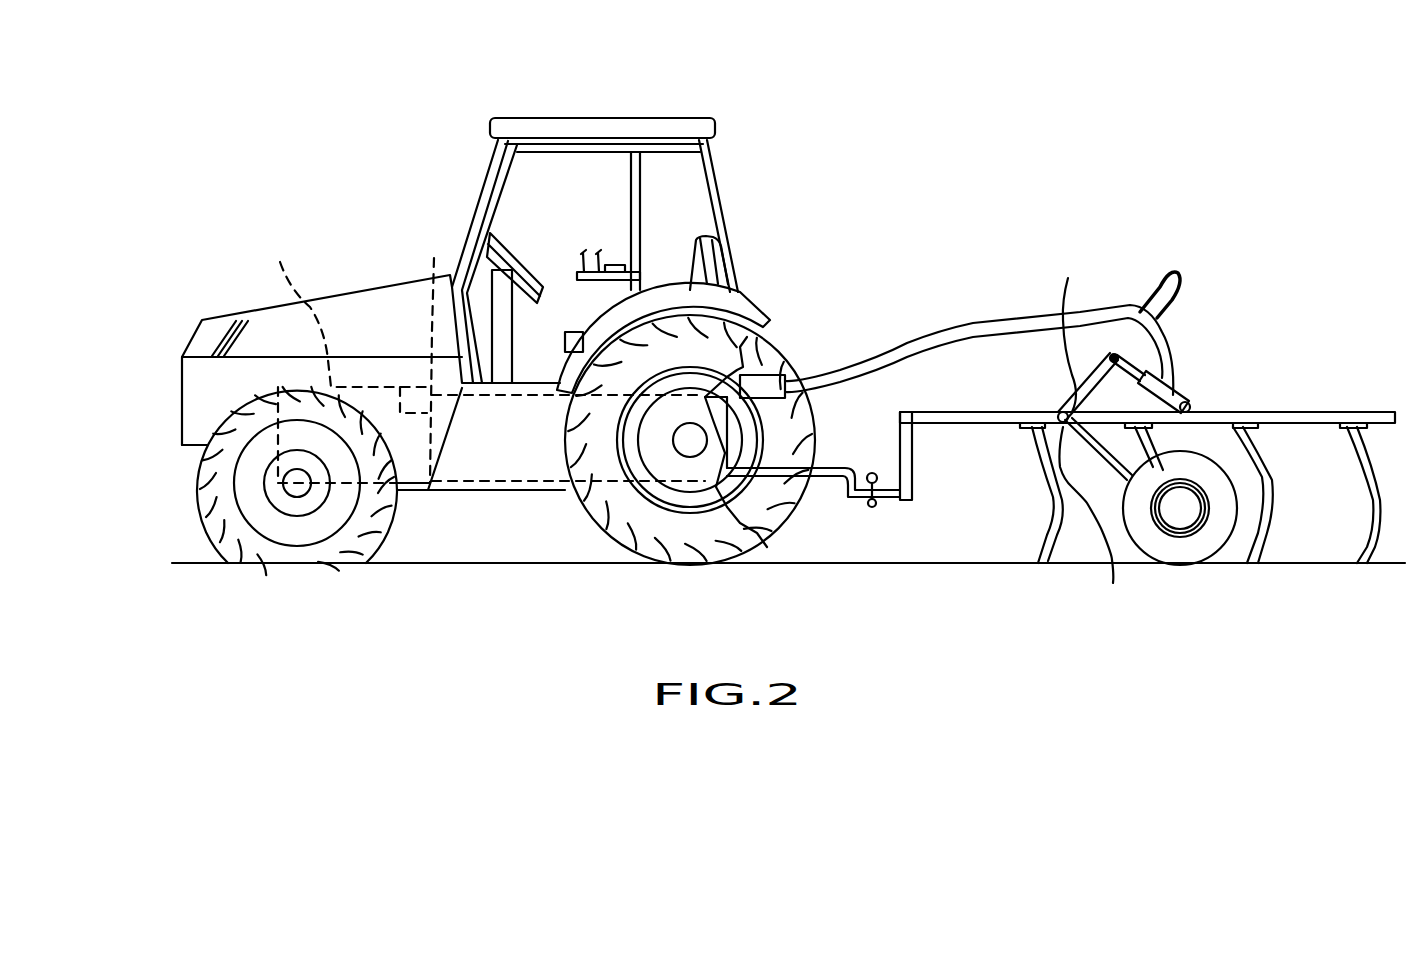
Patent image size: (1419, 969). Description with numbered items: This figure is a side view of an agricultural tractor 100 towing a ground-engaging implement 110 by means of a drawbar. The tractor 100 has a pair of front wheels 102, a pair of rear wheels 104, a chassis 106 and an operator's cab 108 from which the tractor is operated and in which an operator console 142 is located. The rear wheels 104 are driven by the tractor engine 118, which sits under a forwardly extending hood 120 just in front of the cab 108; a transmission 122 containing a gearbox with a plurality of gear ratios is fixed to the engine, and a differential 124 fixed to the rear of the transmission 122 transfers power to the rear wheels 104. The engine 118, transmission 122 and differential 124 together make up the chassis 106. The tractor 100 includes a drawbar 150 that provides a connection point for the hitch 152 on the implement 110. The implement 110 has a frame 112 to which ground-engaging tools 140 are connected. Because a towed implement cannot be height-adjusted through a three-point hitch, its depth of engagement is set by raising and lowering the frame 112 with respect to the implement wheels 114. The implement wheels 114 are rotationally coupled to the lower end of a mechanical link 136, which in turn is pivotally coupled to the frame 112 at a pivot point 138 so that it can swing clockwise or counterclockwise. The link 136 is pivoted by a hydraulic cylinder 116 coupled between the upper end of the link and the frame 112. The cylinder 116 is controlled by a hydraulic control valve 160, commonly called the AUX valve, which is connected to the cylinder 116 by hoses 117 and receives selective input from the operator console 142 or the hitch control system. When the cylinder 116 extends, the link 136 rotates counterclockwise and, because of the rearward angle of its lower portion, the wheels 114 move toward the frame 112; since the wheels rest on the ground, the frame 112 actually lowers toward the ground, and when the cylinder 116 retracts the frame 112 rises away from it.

The agricultural tractor 100 is at (470, 100).
The front wheels 102 is at (225, 545).
The rear wheels 104 is at (686, 453).
The chassis 106 is at (398, 485).
The operator's cab 108 is at (720, 197).
The rear-mounted implement 110 is at (1160, 240).
The frame 112 is at (998, 413).
The implement wheels 114 is at (1195, 550).
The hydraulic cylinder 116 is at (1165, 375).
The hoses 117 is at (1168, 277).
The tractor engine 118 is at (280, 262).
The hood 120 is at (247, 312).
The transmission 122 is at (435, 258).
The differential 124 is at (540, 398).
The mechanical link 136 is at (1068, 278).
The pivot point 138 is at (1113, 583).
The ground-engaging tools 140 is at (1038, 527).
The operator console 142 is at (587, 281).
The drawbar 150 is at (835, 473).
The hitch 152 is at (917, 467).
The hydraulic control valve 160 is at (786, 356).